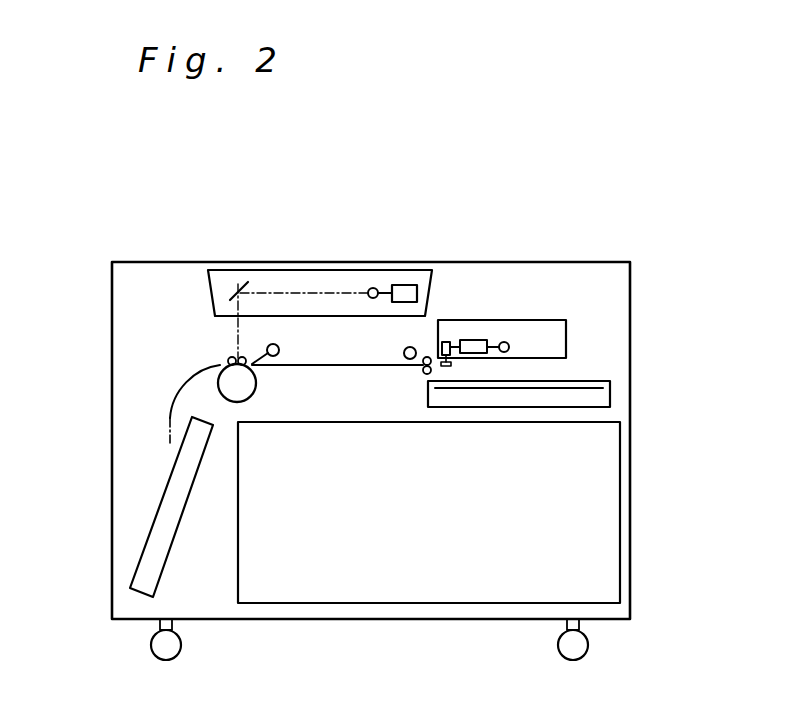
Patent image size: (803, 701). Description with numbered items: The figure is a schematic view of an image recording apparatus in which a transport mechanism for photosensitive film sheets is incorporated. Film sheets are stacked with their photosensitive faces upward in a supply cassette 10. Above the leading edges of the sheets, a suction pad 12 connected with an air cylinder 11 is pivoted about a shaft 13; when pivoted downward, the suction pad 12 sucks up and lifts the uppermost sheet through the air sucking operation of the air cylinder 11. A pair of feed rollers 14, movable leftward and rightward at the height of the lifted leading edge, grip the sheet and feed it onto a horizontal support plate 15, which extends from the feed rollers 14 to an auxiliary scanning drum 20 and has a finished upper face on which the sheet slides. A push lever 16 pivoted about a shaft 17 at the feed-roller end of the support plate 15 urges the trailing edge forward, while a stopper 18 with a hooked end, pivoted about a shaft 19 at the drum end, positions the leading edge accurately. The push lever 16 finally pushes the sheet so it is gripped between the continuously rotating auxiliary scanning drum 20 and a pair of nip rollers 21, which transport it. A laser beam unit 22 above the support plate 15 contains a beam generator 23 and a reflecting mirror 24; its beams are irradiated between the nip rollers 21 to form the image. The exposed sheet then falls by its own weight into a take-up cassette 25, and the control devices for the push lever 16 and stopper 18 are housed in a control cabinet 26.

The supply cassette 10 is at (612, 388).
The air cylinder 11 is at (480, 340).
The suction pad 12 is at (446, 366).
The shaft 13 is at (507, 342).
The feed rollers 14 is at (425, 376).
The support plate 15 is at (333, 367).
The push lever 16 is at (423, 372).
The shaft 17 is at (405, 352).
The stopper 18 is at (259, 358).
The shaft 19 is at (279, 349).
The auxiliary scanning drum 20 is at (252, 401).
The nip rollers 21 is at (240, 358).
The laser beam unit 22 is at (345, 270).
The beam generator 23 is at (410, 284).
The reflecting mirror 24 is at (247, 282).
The take-up cassette 25 is at (155, 513).
The control cabinet 26 is at (597, 533).